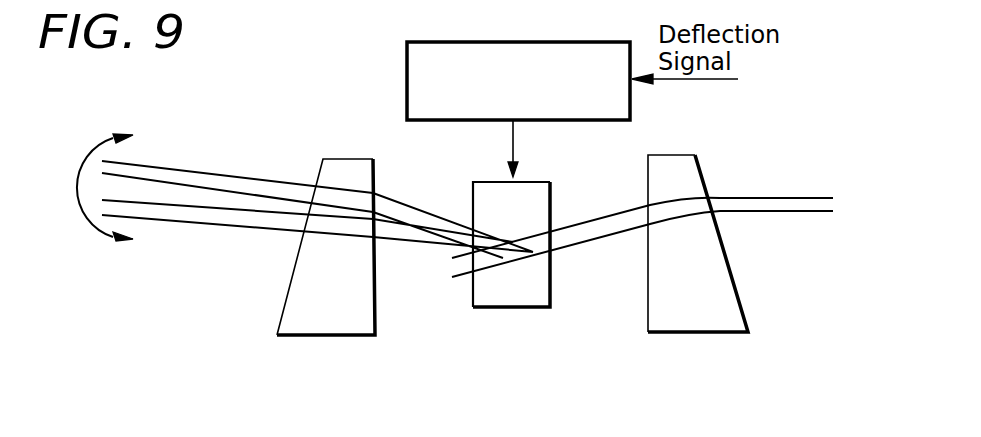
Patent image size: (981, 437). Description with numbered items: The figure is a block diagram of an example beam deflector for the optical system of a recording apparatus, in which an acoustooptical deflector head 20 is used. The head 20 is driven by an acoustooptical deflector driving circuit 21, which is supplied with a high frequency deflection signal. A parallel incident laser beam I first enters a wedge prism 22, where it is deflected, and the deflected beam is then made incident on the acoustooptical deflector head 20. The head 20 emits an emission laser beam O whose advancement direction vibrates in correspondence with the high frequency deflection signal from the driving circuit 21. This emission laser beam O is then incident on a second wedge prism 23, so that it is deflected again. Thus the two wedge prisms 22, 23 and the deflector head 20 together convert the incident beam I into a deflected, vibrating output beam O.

The emission laser beam O is at (163, 166).
The acoustooptical deflector head 20 is at (513, 308).
The acoustooptical deflector driving circuit 21 is at (407, 78).
The wedge prism 22 is at (698, 333).
The wedge prism 23 is at (338, 337).
The incident laser beam I is at (738, 197).